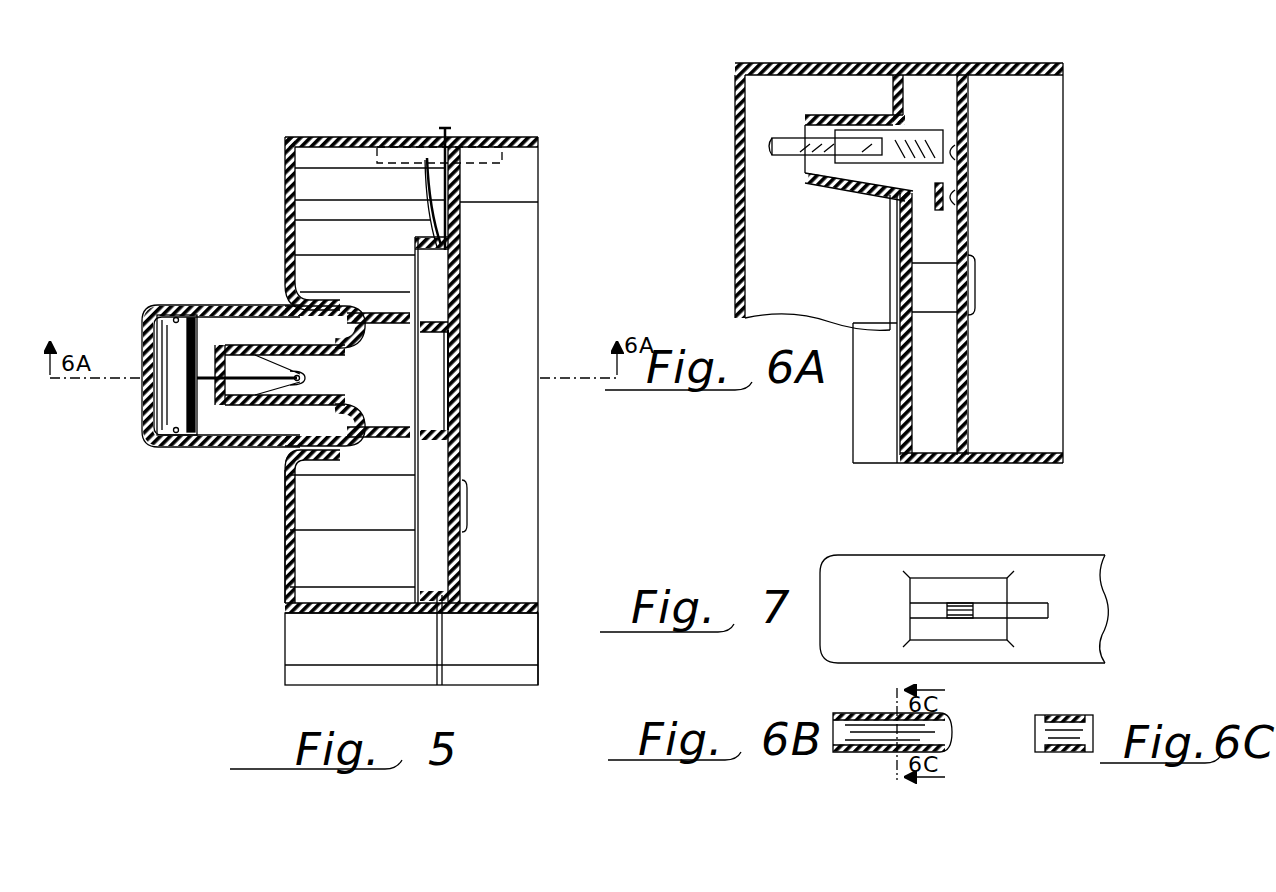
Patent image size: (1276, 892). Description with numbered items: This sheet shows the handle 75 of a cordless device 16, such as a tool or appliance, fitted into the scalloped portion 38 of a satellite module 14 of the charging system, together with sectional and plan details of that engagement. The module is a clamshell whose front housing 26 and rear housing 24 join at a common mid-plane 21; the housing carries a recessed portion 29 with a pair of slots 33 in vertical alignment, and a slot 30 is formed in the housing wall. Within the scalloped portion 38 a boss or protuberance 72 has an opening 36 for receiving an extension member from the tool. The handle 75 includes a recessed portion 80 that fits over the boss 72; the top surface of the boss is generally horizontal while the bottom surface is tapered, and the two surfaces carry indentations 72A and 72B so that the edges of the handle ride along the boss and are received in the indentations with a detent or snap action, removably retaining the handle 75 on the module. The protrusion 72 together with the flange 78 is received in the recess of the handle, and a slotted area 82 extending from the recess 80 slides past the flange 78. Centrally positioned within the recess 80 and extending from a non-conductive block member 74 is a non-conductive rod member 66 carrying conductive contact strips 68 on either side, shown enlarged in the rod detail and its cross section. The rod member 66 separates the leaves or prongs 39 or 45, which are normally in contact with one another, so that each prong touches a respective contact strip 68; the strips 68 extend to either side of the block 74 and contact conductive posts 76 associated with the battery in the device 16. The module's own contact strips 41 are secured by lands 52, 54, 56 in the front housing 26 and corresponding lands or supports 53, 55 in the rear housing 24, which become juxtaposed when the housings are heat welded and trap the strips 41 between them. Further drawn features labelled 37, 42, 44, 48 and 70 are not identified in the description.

In FIG. 5, the satellite modular unit 14 is at (552, 312).
In FIG. 6A, the satellite modular unit 14 is at (1085, 268).
In FIG. 5, the cordless device 16 is at (185, 578).
In FIG. 6A, the cordless device 16 is at (728, 178).
In FIG. 7, the cordless device 16 is at (1140, 612).
In FIG. 6A, the common mid-plane 21 is at (962, 75).
In FIG. 5, the rear housing 24 is at (538, 270).
In FIG. 6A, the rear housing 24 is at (1010, 75).
In FIG. 5, the front housing 26 is at (285, 148).
In FIG. 6A, the front housing 26 is at (930, 75).
In FIG. 5, the recessed portion 29 is at (490, 150).
In FIG. 5, the slot 30 is at (520, 190).
In FIG. 5, the pair of slots 33 is at (447, 135).
In FIG. 5, the opening 36 is at (330, 320).
In FIG. 5, the upper chamber 37 is at (330, 190).
In FIG. 5, the scalloped portion 38 is at (280, 458).
In FIG. 6A, the scalloped portion 38 is at (920, 440).
In FIG. 5, the leaves or prongs 39 is at (450, 395).
In FIG. 6A, the leaves or prongs 39 is at (968, 172).
In FIG. 5, the contact strips 41 is at (448, 325).
In FIG. 5, the spring contact 42 is at (427, 158).
In FIG. 6A, the spring contact 42 is at (975, 235).
In FIG. 5, the base 44 is at (515, 645).
In FIG. 5, the prongs 45 is at (275, 398).
In FIG. 5, the base plate 48 is at (500, 680).
In FIG. 5, the land 52 is at (400, 582).
In FIG. 5, the land or support 53 is at (448, 245).
In FIG. 5, the land 54 is at (355, 232).
In FIG. 5, the land or support 55 is at (450, 375).
In FIG. 6A, the land or support 55 is at (968, 150).
In FIG. 5, the land 56 is at (355, 318).
In FIG. 5, the rod member 66 is at (240, 348).
In FIG. 7, the rod member 66 is at (962, 605).
In FIG. 6B, the rod member 66 is at (840, 738).
In FIG. 6C, the rod member 66 is at (1040, 740).
In FIG. 5, the contact strips 68 is at (225, 340).
In FIG. 6A, the contact strips 68 is at (775, 140).
In FIG. 7, the contact strips 68 is at (950, 605).
In FIG. 6B, the contact strips 68 is at (852, 715).
In FIG. 6C, the contact strips 68 is at (1065, 716).
In FIG. 5, the contact pin 70 is at (296, 384).
In FIG. 6A, the boss or protuberance 72 is at (845, 130).
In FIG. 6A, the indentation 72A is at (890, 118).
In FIG. 6A, the indentation 72B is at (885, 250).
In FIG. 5, the block member 74 is at (172, 392).
In FIG. 5, the handle 75 is at (140, 350).
In FIG. 6A, the handle 75 is at (735, 217).
In FIG. 7, the handle 75 is at (1098, 553).
In FIG. 5, the conductive posts 76 is at (158, 316).
In FIG. 6A, the flange 78 is at (830, 225).
In FIG. 7, the recessed portion 80 is at (1000, 640).
In FIG. 7, the slotted area 82 is at (1010, 600).